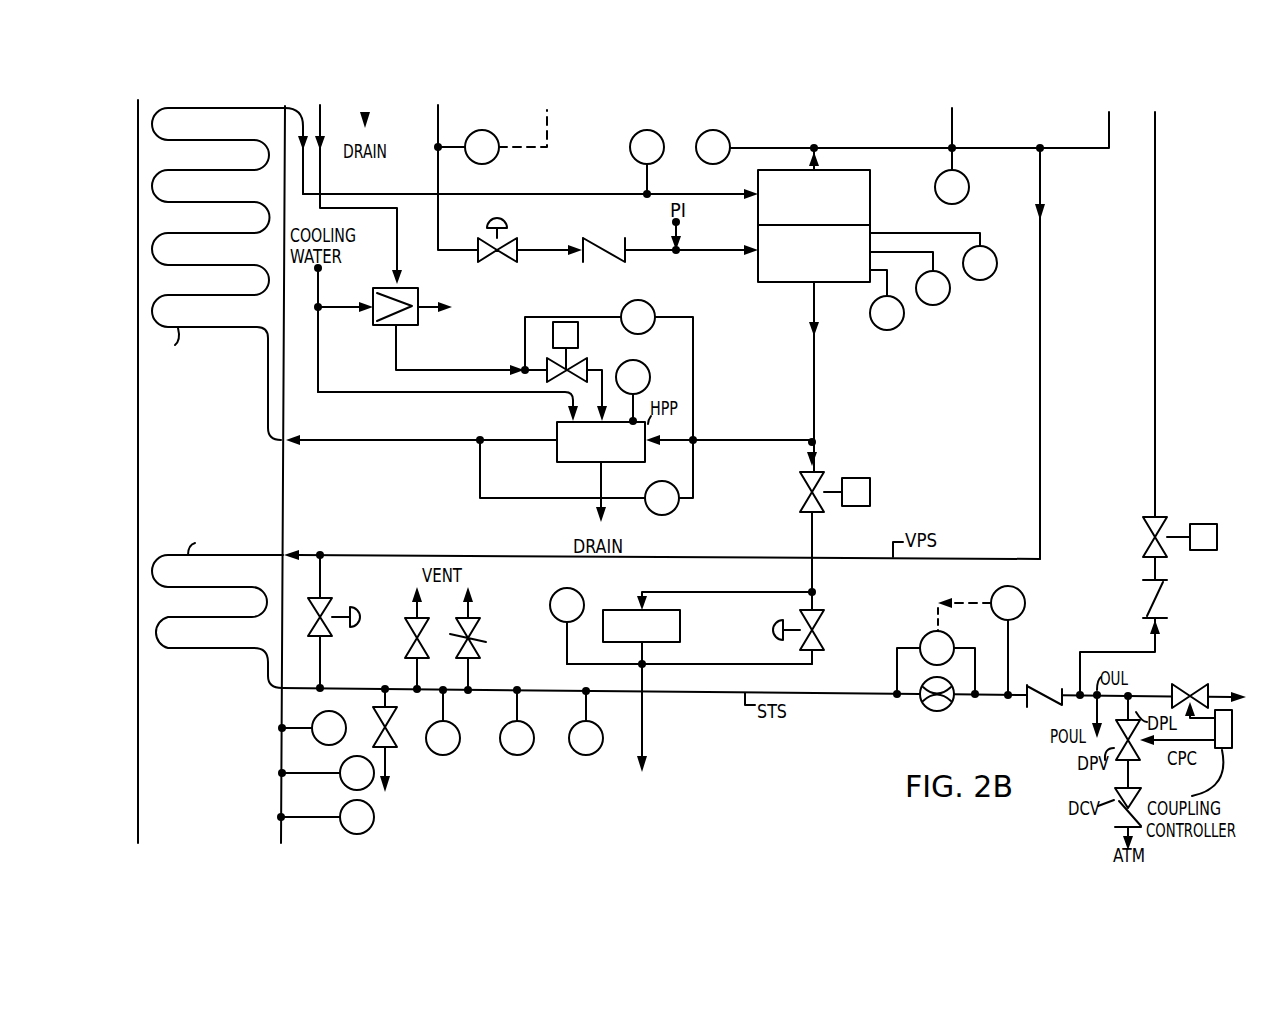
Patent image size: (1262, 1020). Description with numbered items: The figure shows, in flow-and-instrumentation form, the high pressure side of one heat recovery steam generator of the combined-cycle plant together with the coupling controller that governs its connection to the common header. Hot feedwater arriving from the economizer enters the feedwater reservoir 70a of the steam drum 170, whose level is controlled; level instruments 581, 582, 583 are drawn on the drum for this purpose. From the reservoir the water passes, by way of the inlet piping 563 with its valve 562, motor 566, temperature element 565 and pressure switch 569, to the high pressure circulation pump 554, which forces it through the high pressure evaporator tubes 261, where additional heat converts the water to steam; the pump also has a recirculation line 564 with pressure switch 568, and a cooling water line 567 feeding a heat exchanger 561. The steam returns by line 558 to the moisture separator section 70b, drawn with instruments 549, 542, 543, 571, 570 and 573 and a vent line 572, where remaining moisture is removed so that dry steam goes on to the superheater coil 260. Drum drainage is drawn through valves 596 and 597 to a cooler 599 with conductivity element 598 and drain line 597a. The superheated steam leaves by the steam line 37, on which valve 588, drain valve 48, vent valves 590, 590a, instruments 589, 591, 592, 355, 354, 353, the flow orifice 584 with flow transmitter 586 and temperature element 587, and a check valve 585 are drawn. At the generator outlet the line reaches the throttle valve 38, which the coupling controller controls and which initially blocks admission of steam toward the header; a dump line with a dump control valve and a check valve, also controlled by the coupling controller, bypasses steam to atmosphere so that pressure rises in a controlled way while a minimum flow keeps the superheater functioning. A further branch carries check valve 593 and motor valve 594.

The high pressure evaporator tubes 261 is at (212, 328).
The superheater coil (SH) 260 is at (190, 650).
The steam line to moisture separator 558 is at (364, 195).
The temperature element 549 is at (486, 164).
The control valve 542 is at (480, 244).
The check valve 543 is at (604, 244).
The temperature switch 571 is at (630, 147).
The pressure switch 570 is at (730, 147).
The vent/steam line 572 is at (840, 148).
The pressure transmitter 573 is at (969, 190).
The moisture separator section 70b is at (870, 172).
The feedwater reservoir 70a is at (835, 282).
The steam drum 170 is at (766, 283).
The level switch 581 is at (997, 262).
The level switch 582 is at (950, 287).
The level transmitter 583 is at (904, 315).
The heat exchanger 561 is at (426, 287).
The cooling water line 567 is at (318, 320).
The pump inlet line 563 is at (570, 400).
The motor operated valve 562 is at (551, 360).
The valve motor 566 is at (546, 322).
The pressure switch 569 is at (650, 308).
The temperature element 565 is at (633, 362).
The high pressure circulation pump 554 is at (555, 462).
The pump recirculation line 564 is at (597, 508).
The pressure switch 568 is at (679, 502).
The motor operated valve 596 is at (802, 486).
The control valve 597 is at (824, 620).
The conductivity element 598 is at (580, 590).
The sample cooler 599 is at (682, 630).
The cooler drain line 597a is at (645, 728).
The steam supply line 37 is at (336, 688).
The control valve 588 is at (309, 603).
The drain valve 48 is at (378, 720).
The vent valve 590 is at (410, 626).
The relief valve 590a is at (481, 642).
The temperature element 589 is at (443, 755).
The temperature element 591 is at (517, 755).
The pressure transmitter 592 is at (586, 755).
The pressure switch 355 is at (320, 743).
The temperature element 354 is at (345, 788).
The temperature element 353 is at (345, 832).
The flow transmitter 586 is at (931, 633).
The temperature element 587 is at (997, 593).
The flow orifice 584 is at (920, 705).
The check valve 585 is at (1036, 689).
The check valve 593 is at (1147, 600).
The motor operated valve 594 is at (1145, 530).
The throttle valve 38 is at (1192, 684).